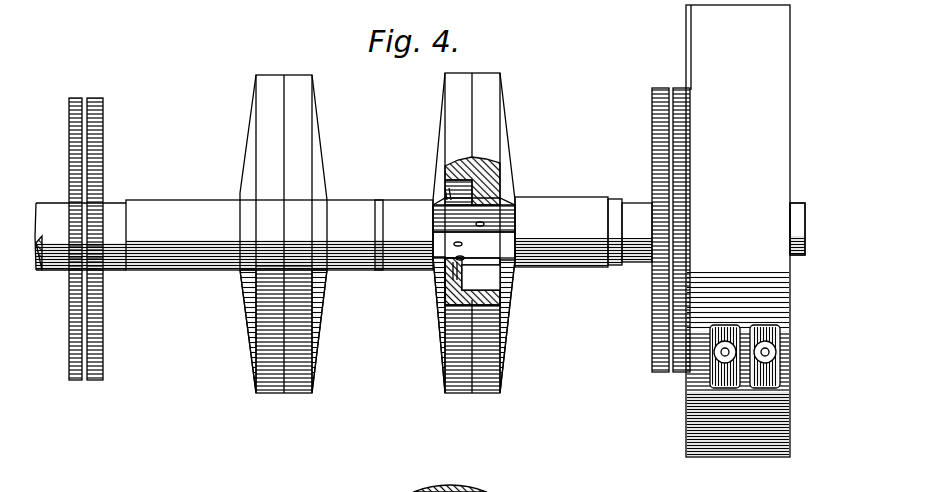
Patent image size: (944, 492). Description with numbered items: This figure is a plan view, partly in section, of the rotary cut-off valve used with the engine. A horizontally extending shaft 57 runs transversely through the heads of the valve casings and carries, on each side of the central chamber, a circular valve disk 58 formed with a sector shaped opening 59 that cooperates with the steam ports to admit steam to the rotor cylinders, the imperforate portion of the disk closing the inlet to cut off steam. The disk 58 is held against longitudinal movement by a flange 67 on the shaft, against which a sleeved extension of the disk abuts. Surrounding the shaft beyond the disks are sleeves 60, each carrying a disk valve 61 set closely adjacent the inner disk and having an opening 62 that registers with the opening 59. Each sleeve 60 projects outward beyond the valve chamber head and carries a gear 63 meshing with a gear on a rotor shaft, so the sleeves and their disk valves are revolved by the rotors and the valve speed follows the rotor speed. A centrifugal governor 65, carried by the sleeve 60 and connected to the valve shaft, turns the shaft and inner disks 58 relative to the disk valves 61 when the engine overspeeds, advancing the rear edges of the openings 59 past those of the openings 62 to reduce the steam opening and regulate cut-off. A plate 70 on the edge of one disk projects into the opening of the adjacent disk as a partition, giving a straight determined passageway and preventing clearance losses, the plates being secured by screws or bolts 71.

The shaft 57 is at (790, 243).
The circular valve disk 58 is at (305, 350).
The sector shaped opening 59 is at (445, 197).
The sleeve 60 is at (195, 215).
The disk valve 61 is at (255, 362).
The opening 62 is at (500, 274).
The gear 63 is at (104, 325).
The centrifugal governor 65 is at (738, 231).
The flange 67 is at (378, 270).
The plate 70 is at (498, 243).
The screws or bolts 71 is at (447, 255).